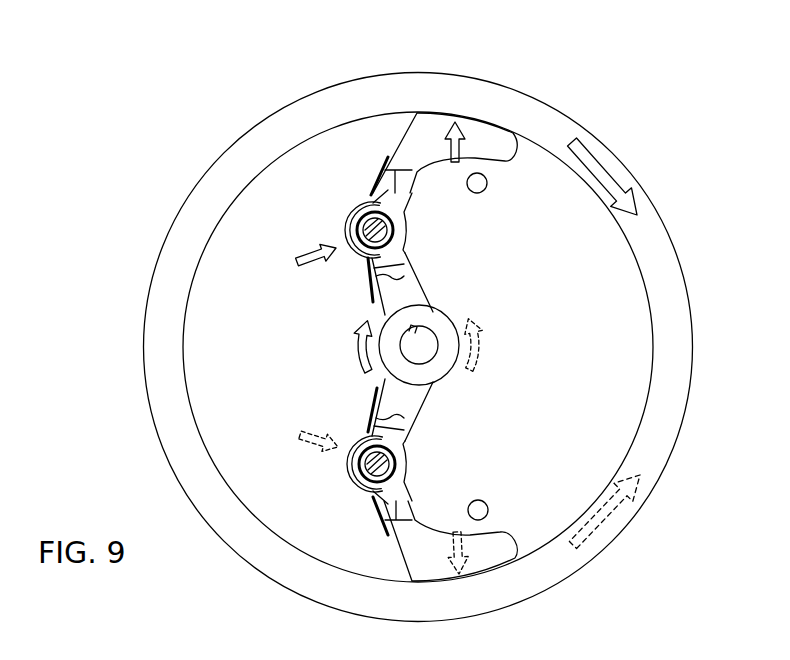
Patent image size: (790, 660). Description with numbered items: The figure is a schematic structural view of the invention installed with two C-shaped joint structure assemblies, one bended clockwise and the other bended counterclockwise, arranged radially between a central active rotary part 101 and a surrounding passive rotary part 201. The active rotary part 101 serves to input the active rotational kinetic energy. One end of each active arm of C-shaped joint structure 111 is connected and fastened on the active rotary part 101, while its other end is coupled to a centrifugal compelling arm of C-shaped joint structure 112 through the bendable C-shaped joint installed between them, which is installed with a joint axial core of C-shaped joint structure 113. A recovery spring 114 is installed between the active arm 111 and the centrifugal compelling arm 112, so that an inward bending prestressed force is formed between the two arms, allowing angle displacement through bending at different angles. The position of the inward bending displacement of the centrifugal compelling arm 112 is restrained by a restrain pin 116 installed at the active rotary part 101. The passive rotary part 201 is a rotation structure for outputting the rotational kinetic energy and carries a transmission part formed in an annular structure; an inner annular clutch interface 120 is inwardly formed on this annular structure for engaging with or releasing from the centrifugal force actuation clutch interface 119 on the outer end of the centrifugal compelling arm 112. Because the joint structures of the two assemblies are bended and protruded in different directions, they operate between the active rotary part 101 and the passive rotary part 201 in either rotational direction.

The passive rotary part 201 is at (262, 150).
The centrifugal force actuation clutch interface 119 is at (473, 117).
The inner annular clutch interface 120 is at (641, 265).
The centrifugal compelling arm of C-shaped joint structure 112 is at (397, 138).
The active arm of C-shaped joint structure 111 is at (412, 297).
The joint axial core of C-shaped joint structure 113 is at (352, 228).
The recovery spring 114 is at (370, 283).
The restrain pin 116 is at (477, 185).
The active rotary part 101 is at (423, 348).